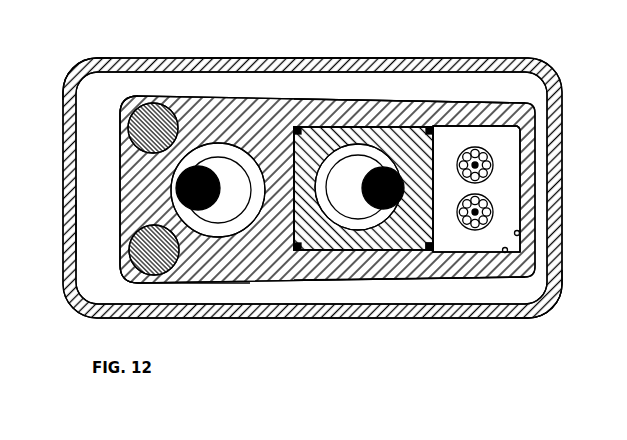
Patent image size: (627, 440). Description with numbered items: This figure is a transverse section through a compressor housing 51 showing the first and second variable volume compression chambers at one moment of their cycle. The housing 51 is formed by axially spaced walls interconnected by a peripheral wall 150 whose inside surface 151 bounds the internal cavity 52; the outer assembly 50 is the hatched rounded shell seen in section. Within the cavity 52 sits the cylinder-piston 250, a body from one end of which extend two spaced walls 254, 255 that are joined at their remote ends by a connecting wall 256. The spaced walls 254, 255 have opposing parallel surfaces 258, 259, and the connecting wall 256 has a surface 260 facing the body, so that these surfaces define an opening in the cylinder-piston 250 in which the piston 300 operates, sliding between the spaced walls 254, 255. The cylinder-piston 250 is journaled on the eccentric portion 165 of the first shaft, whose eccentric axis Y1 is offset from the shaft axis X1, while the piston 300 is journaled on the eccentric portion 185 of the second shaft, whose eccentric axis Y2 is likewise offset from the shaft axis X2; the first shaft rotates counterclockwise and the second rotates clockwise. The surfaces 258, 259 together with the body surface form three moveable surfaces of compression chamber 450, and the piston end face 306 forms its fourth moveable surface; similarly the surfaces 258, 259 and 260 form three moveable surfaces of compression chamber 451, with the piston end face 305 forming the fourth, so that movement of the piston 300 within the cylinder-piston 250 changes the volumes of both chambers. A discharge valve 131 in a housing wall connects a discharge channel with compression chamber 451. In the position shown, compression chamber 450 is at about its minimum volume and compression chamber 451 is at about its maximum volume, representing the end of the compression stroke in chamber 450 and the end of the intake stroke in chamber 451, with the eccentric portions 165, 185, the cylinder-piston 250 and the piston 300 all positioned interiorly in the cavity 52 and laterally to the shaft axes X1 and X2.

The connector assembly 50 is at (470, 59).
The peripheral wall 150 is at (308, 66).
The housing 51 is at (82, 66).
The inside surface 151 is at (538, 299).
The cavity 52 is at (105, 241).
The cylinder-piston 250 is at (277, 95).
The spaced wall 254 is at (400, 112).
The spaced wall 255 is at (418, 268).
The compression chamber 450 is at (283, 245).
The end face 306 is at (291, 245).
The axis X1 is at (196, 188).
The axis Y1 is at (220, 198).
The eccentric portion 165 is at (236, 184).
The piston 300 is at (358, 252).
The end face 305 is at (433, 247).
The eccentric portion 185 is at (362, 184).
The axis X2 is at (403, 185).
The axis Y2 is at (352, 197).
The surface 258 is at (473, 124).
The connecting wall 256 is at (527, 170).
The compression chamber 451 is at (500, 190).
The discharge valve 131 is at (482, 160).
The surface 260 is at (520, 234).
The surface 259 is at (505, 253).